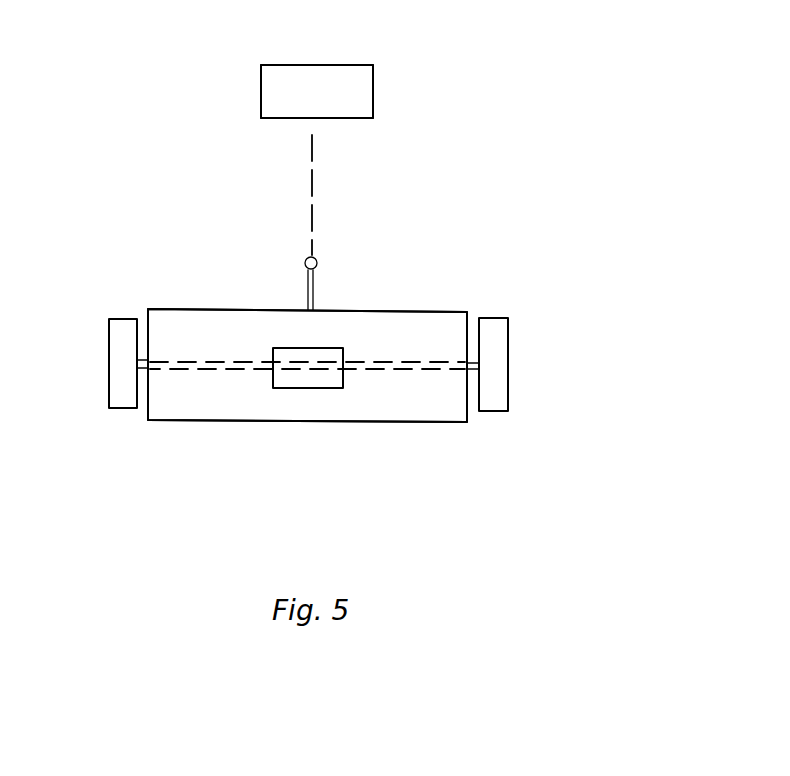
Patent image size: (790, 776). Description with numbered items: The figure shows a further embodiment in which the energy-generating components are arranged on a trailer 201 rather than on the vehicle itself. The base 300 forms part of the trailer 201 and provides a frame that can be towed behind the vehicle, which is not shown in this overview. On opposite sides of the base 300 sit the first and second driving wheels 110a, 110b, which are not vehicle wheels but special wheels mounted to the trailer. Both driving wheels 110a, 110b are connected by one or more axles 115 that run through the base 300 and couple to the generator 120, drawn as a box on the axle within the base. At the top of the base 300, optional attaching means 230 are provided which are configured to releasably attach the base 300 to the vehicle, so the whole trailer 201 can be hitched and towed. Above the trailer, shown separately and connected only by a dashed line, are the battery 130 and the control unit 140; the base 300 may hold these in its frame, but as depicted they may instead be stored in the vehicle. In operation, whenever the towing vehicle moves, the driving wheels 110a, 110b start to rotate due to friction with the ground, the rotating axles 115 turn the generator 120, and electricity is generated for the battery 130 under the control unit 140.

The trailer 201 is at (168, 278).
The base 300 is at (400, 319).
The generator 120 is at (310, 380).
The axle 115 is at (400, 367).
The first driving wheel 110a is at (500, 328).
The second driving wheel 110b is at (94, 344).
The attaching means 230 is at (313, 273).
The battery 130 is at (352, 79).
The control unit 140 is at (397, 37).